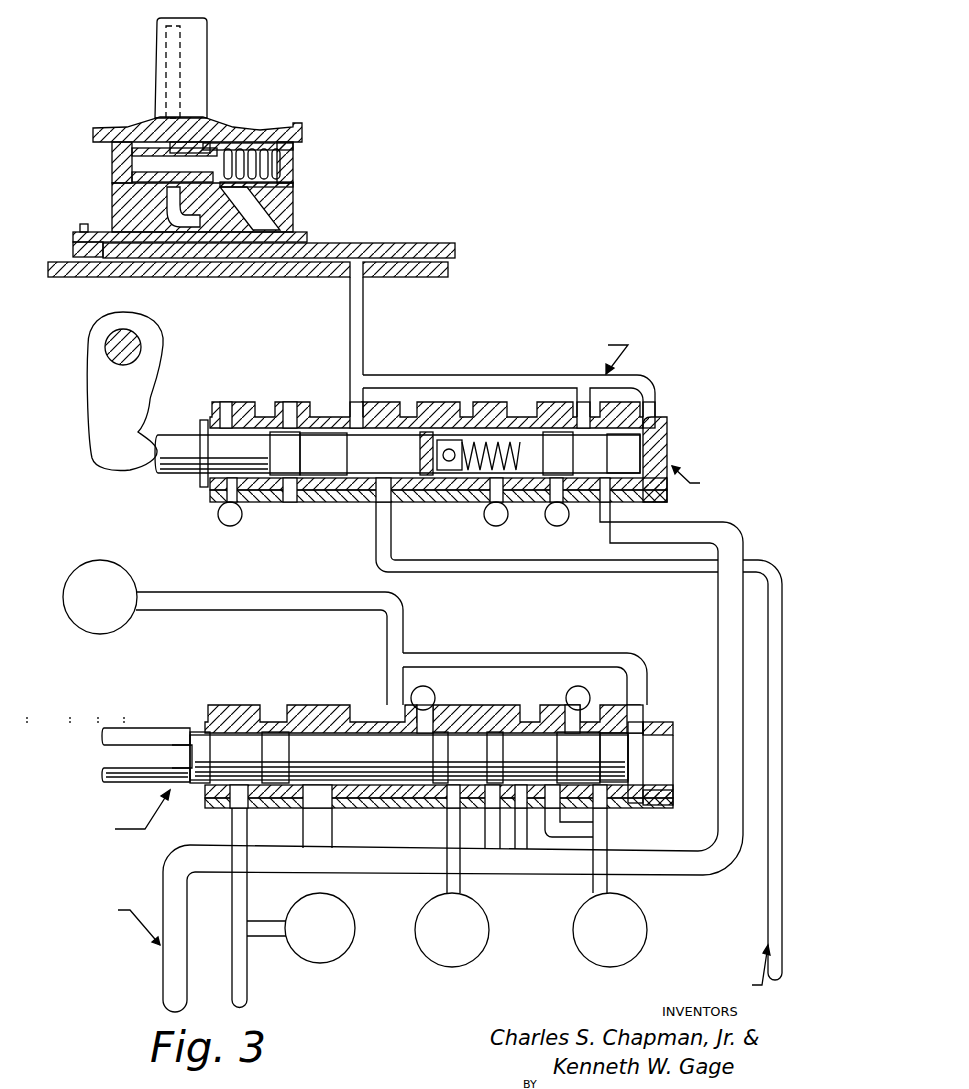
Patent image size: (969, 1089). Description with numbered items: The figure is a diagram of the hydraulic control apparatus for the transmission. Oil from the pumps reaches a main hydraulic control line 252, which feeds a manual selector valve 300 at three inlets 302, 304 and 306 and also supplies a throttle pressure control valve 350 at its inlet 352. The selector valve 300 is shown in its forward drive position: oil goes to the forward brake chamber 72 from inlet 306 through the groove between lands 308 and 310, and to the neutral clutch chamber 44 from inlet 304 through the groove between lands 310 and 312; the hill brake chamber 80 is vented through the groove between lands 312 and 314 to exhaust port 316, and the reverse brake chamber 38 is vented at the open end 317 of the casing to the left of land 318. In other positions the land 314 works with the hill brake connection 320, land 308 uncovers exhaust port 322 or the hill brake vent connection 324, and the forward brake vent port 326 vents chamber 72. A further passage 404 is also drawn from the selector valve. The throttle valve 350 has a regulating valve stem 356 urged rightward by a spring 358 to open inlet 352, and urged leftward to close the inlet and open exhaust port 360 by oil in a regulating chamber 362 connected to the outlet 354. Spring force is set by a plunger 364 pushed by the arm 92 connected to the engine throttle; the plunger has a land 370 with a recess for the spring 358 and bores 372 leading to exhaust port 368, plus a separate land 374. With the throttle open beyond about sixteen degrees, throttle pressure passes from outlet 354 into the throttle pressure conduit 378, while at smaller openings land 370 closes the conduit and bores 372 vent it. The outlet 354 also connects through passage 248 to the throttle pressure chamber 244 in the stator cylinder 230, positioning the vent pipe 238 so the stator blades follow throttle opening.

The stator cylinder 230 is at (95, 142).
The throttle pressure chamber 244 is at (212, 124).
The vent pipe 238 is at (150, 176).
The passage 248 is at (455, 268).
The arm 92 is at (135, 392).
The throttle pressure control valve 350 is at (660, 413).
The land 374 is at (315, 490).
The plunger 364 is at (190, 472).
The outlet 354 is at (348, 372).
The land 370 is at (428, 430).
The bores 372 is at (445, 475).
The spring 358 is at (490, 438).
The regulating valve stem 356 is at (622, 432).
The regulating chamber 362 is at (670, 442).
The inlet 352 is at (640, 512).
The exhaust port 368 is at (500, 526).
The exhaust port 360 is at (552, 526).
The throttle pressure conduit 378 is at (480, 570).
The hill brake chamber 80 is at (105, 622).
The manual selector valve 300 is at (335, 690).
The open end 317 is at (205, 730).
The land 318 is at (275, 730).
The connection 320 is at (390, 720).
The exhaust port 316 is at (442, 730).
The land 310 is at (496, 730).
The exhaust port 322 is at (590, 700).
The land 308 is at (612, 730).
The hill brake vent connection 324 is at (655, 718).
The inlet 302 is at (305, 812).
The land 314 is at (350, 812).
The land 312 is at (440, 810).
The forward brake vent port 326 is at (608, 815).
The inlet 304 is at (492, 848).
The inlet 306 is at (522, 848).
The main hydraulic control line 252 is at (170, 958).
The reverse clutch line 404 is at (248, 978).
The reverse brake chamber 38 is at (325, 962).
The neutral clutch chamber 44 is at (455, 966).
The forward brake chamber 72 is at (638, 948).